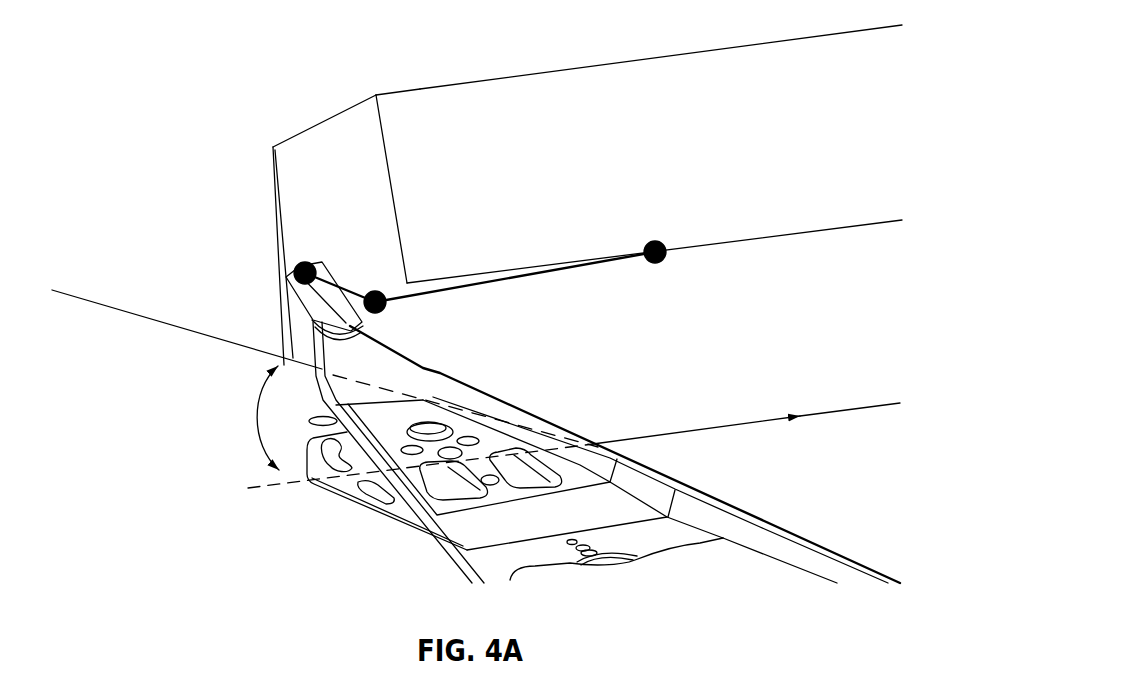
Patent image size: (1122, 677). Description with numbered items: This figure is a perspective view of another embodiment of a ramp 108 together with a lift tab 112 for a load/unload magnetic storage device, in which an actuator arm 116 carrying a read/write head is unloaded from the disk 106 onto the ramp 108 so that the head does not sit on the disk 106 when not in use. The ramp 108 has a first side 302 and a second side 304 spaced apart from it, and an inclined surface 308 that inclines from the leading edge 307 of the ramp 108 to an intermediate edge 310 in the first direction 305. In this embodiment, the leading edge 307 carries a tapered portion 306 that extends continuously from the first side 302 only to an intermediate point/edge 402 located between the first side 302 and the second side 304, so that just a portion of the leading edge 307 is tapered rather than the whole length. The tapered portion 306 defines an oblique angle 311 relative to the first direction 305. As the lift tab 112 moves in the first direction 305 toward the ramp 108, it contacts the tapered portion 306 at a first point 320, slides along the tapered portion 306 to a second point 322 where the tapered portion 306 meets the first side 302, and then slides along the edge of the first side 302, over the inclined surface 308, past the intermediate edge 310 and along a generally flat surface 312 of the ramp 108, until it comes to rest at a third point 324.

The disk 106 is at (147, 440).
The ramp 108 is at (303, 70).
The lift tab 112 is at (298, 305).
The actuator arm 116 is at (423, 510).
The first side 302 is at (587, 357).
The second side 304 is at (306, 122).
The first direction 305 is at (281, 490).
The tapered portion 306 is at (303, 333).
The leading edge 307 is at (212, 212).
The inclined surface 308 is at (352, 201).
The intermediate edge 310 is at (376, 92).
The oblique angle 311 is at (260, 418).
The generally flat surface 312 is at (587, 199).
The first point 320 is at (305, 262).
The second point 322 is at (378, 290).
The third point 324 is at (661, 247).
The intermediate point/edge 402 is at (290, 311).